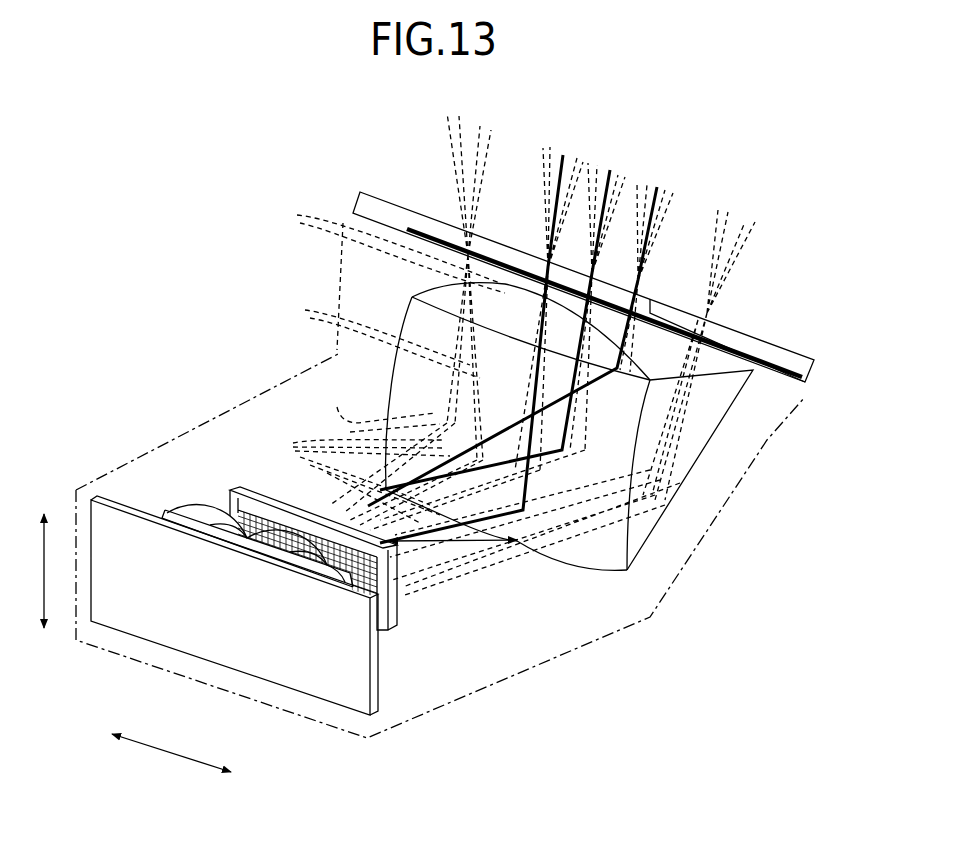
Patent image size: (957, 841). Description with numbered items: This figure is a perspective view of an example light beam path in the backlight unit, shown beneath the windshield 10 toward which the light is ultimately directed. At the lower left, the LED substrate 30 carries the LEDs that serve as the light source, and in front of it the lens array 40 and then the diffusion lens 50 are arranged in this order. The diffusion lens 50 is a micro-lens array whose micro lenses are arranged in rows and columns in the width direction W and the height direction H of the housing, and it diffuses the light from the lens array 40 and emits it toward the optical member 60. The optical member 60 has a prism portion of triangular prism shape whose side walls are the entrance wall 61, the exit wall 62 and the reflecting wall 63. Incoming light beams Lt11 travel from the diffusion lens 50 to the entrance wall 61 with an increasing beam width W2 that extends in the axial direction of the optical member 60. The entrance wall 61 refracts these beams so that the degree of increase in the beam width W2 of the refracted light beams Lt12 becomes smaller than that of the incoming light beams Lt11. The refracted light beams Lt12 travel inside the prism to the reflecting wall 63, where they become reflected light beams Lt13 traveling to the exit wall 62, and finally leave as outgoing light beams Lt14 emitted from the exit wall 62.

The windshield 10 is at (392, 190).
The LED substrate 30 is at (118, 497).
The lens array 40 is at (183, 500).
The diffusion lens 50 is at (248, 482).
The optical member 60 is at (393, 323).
The entrance wall 61 is at (413, 382).
The exit wall 62 is at (509, 300).
The reflecting wall 63 is at (673, 508).
The incoming light beams Lt11 is at (356, 437).
The refracted light beams Lt12 is at (376, 408).
The reflected light beams Lt13 is at (366, 339).
The outgoing light beams Lt14 is at (376, 249).
The beam width W2 is at (487, 545).
The height direction H is at (30, 571).
The width direction W is at (171, 752).